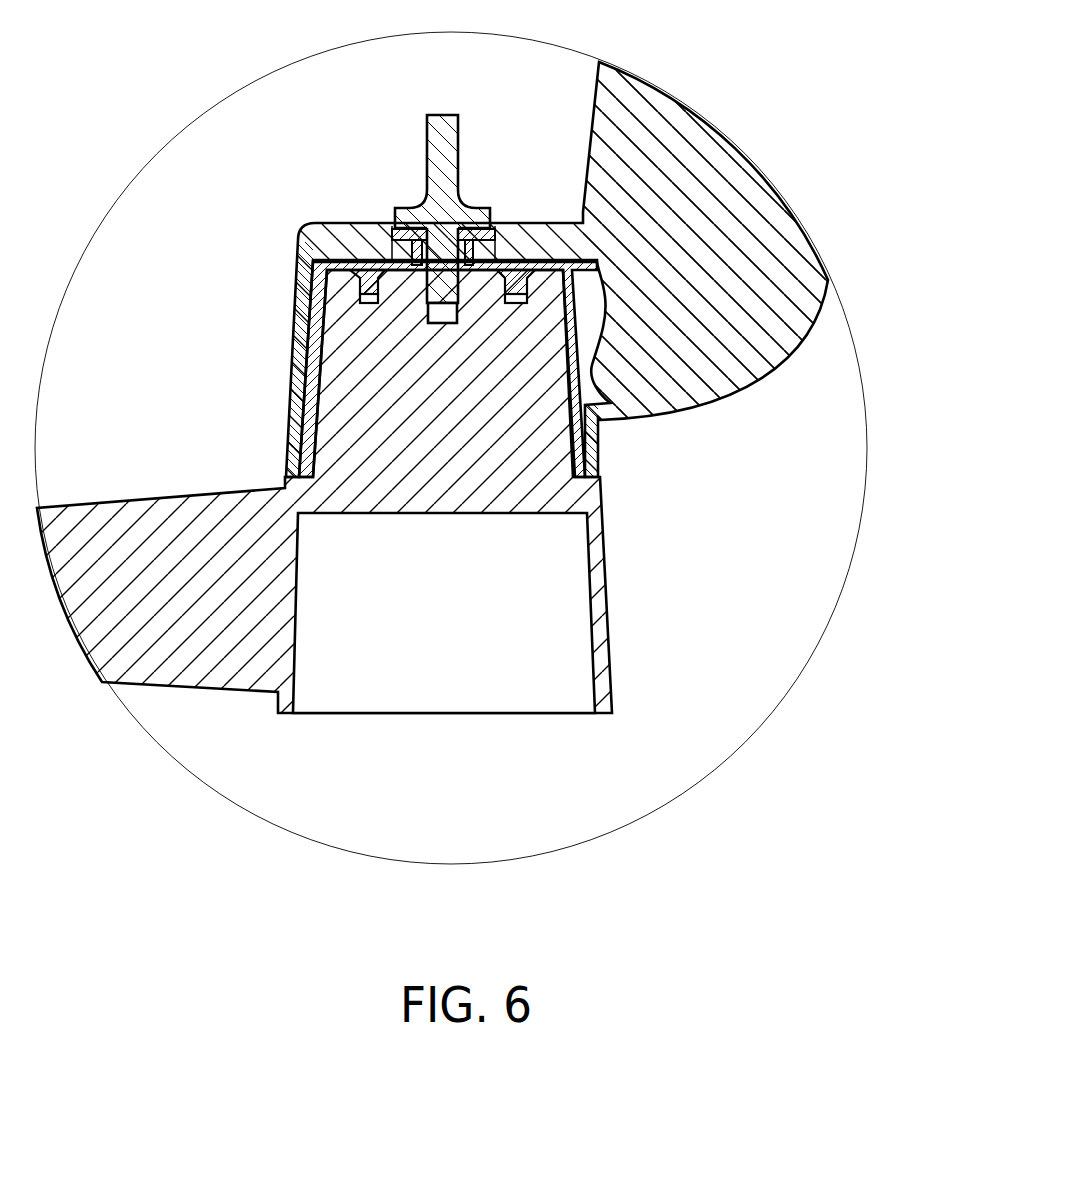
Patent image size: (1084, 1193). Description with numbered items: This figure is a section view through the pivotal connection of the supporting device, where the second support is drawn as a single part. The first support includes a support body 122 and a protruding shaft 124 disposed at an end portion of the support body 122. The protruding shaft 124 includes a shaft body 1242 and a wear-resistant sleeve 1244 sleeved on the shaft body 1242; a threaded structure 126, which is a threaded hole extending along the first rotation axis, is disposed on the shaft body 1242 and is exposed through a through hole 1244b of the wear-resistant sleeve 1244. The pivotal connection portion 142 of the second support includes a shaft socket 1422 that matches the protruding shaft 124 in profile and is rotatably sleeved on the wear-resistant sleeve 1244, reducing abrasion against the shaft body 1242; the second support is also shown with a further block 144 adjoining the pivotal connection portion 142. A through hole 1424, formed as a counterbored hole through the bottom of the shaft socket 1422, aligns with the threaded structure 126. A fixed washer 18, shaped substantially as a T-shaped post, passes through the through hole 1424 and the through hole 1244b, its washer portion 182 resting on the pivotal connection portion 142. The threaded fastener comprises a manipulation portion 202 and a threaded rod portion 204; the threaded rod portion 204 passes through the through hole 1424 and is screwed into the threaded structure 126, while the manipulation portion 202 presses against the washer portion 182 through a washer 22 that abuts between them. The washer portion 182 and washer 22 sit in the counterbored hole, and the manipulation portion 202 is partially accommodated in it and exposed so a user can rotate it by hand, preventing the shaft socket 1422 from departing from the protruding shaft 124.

The support body 122 is at (190, 650).
The protruding shaft 124 is at (331, 463).
The shaft body 1242 is at (340, 447).
The wear-resistant sleeve 1244 is at (318, 383).
The through hole 1244b is at (387, 246).
The threaded structure 126 is at (438, 317).
The pivotal connection portion 142 is at (543, 237).
The housing block 144 is at (713, 190).
The shaft socket 1422 is at (312, 285).
The through hole 1424 is at (390, 238).
The manipulation portion 202 is at (437, 153).
The threaded rod portion 204 is at (437, 280).
The fixed washer 18 is at (398, 163).
The washer portion 182 is at (478, 230).
The washer 22 is at (392, 243).